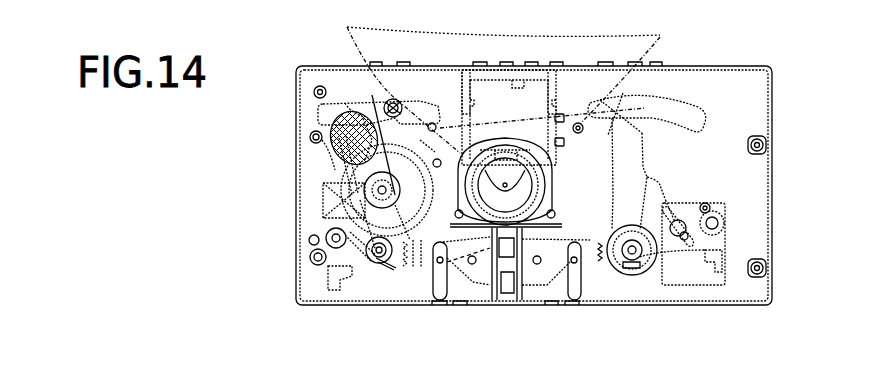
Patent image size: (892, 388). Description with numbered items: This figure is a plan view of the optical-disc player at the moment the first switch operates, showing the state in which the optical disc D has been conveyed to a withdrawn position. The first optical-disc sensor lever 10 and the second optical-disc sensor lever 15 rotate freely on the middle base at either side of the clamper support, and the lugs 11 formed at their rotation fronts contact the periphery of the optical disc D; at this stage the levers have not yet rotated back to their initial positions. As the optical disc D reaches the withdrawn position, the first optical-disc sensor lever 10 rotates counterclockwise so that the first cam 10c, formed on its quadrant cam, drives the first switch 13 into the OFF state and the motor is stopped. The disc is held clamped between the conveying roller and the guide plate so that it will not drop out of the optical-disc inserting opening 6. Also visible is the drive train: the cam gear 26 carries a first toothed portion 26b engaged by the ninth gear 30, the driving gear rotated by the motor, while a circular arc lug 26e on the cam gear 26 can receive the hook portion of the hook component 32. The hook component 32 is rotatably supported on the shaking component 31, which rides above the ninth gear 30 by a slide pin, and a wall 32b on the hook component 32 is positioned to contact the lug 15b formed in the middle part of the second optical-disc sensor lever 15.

The optical-disc inserting opening 6 is at (453, 67).
The optical disc D is at (660, 35).
The first optical-disc sensor lever 10 is at (637, 132).
The first cam 10c is at (703, 205).
The lug (detection part) 11 is at (447, 125).
The first switch 13 is at (727, 205).
The second optical-disc sensor lever 15 is at (372, 103).
The lug 15b is at (395, 115).
The cam gear 26 is at (412, 163).
The first toothed portion 26b is at (560, 133).
The circular arc lug (convex portion) 26e is at (395, 237).
The ninth gear (driving gear) 30 is at (347, 103).
The shaking component 31 is at (318, 140).
The hook component 32 is at (330, 150).
The wall (contact portion) 32b is at (346, 158).